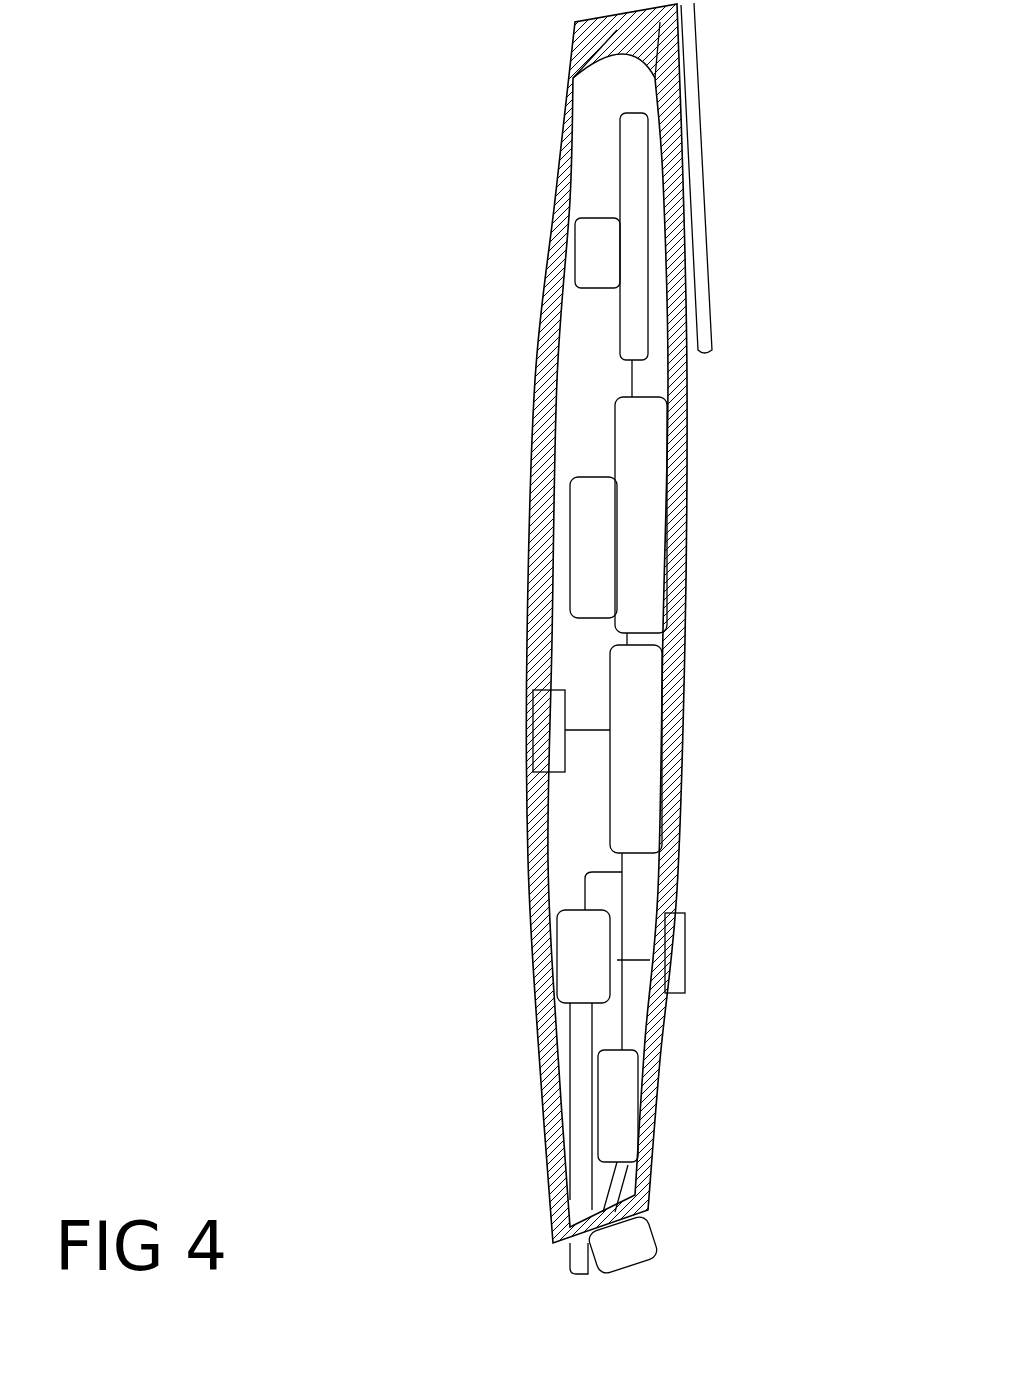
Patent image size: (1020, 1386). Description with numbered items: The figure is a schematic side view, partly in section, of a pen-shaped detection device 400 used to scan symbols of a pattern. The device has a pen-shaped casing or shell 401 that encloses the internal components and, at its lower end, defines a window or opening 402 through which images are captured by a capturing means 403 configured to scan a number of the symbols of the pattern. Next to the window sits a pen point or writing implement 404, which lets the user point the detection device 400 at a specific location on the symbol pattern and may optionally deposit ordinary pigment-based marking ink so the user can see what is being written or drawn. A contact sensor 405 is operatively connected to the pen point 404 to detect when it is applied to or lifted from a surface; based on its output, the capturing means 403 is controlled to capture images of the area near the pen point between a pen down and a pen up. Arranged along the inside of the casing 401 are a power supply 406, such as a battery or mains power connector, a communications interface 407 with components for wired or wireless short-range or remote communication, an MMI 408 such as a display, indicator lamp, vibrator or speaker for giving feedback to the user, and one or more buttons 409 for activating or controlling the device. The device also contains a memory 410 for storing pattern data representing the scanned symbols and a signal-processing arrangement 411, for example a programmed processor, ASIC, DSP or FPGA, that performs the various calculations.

The detection device 400 is at (614, 660).
The pen-shaped casing 401 is at (690, 432).
The window 402 is at (650, 1232).
The capturing means 403 is at (613, 1097).
The pen point 404 is at (570, 1267).
The contact sensor 405 is at (578, 957).
The power supply 406 is at (590, 543).
The communications interface 407 is at (635, 230).
The MMI 408 is at (527, 723).
The buttons 409 is at (685, 958).
The memory 410 is at (653, 523).
The signal-processing arrangement 411 is at (643, 740).